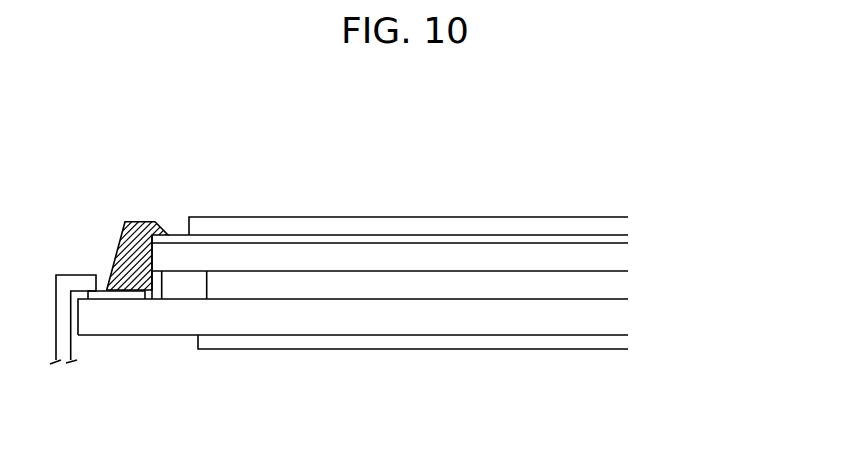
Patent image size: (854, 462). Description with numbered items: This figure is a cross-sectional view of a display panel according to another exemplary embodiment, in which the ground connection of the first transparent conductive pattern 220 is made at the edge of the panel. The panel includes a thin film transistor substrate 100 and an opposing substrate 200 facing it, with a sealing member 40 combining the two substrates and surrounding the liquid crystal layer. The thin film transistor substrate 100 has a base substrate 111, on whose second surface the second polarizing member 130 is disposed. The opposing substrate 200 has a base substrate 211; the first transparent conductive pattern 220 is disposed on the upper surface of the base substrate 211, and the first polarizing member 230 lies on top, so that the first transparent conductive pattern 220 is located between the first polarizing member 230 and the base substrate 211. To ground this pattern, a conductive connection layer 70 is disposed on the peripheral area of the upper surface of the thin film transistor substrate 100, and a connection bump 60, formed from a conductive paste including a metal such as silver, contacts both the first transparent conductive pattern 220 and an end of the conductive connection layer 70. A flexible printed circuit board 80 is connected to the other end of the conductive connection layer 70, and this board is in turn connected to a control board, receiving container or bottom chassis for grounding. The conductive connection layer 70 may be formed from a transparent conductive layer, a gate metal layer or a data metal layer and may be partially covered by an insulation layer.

The sealing member 40 is at (182, 278).
The connection bump 60 is at (137, 222).
The conductive connection layer 70 is at (118, 295).
The flexible printed circuit board 80 is at (75, 283).
The thin film transistor substrate 100 is at (408, 330).
The base substrate 111 is at (623, 326).
The second polarizing member 130 is at (623, 345).
The opposing substrate 200 is at (447, 247).
The base substrate 211 is at (423, 269).
The first transparent conductive pattern 220 is at (623, 238).
The first polarizing member 230 is at (623, 226).